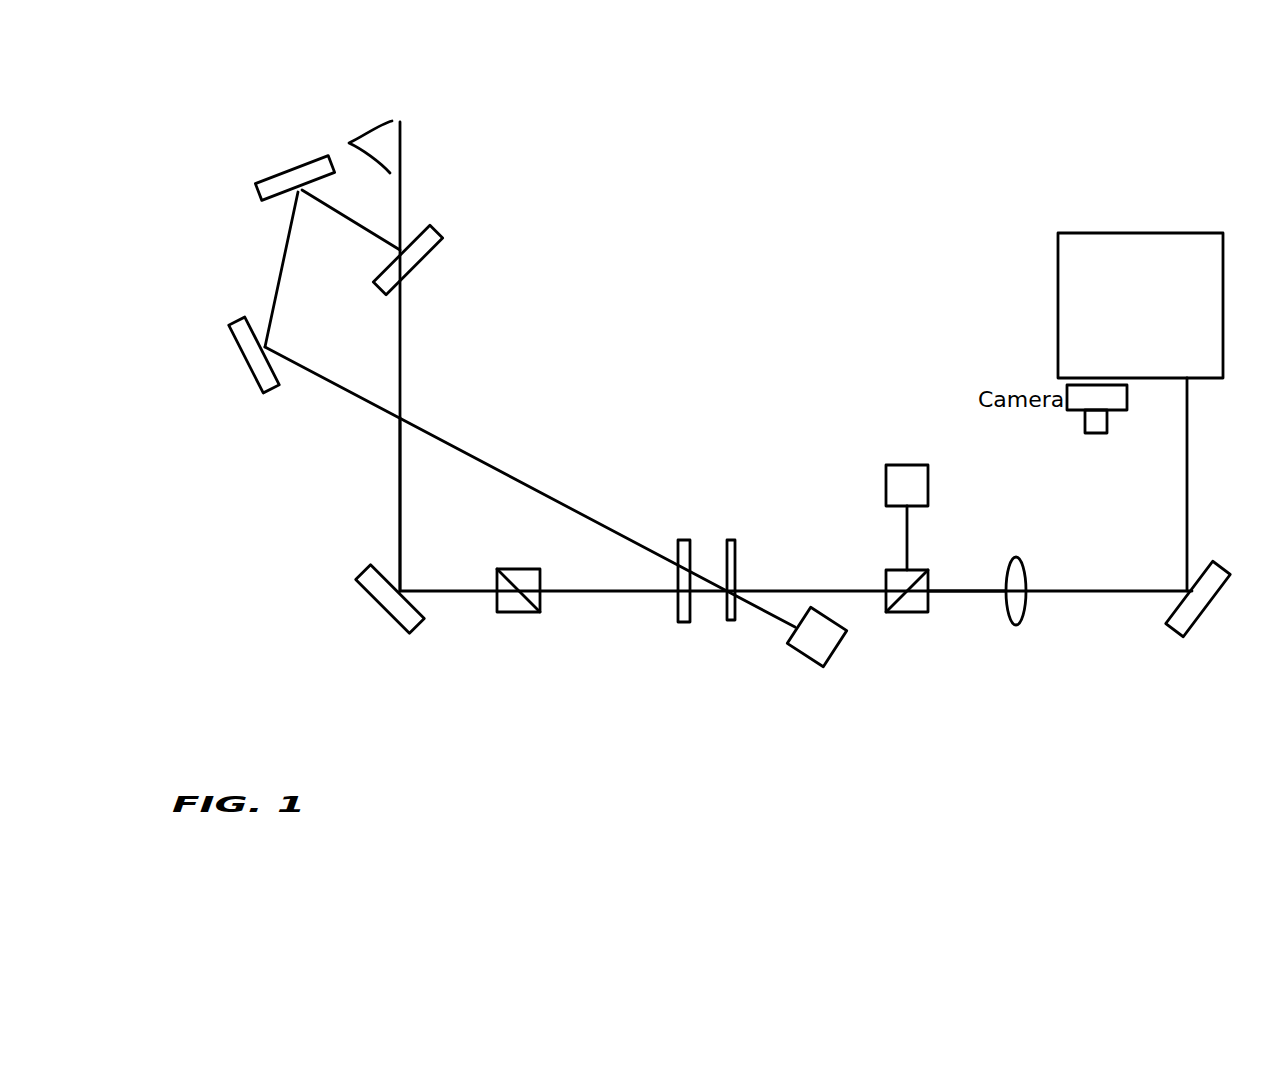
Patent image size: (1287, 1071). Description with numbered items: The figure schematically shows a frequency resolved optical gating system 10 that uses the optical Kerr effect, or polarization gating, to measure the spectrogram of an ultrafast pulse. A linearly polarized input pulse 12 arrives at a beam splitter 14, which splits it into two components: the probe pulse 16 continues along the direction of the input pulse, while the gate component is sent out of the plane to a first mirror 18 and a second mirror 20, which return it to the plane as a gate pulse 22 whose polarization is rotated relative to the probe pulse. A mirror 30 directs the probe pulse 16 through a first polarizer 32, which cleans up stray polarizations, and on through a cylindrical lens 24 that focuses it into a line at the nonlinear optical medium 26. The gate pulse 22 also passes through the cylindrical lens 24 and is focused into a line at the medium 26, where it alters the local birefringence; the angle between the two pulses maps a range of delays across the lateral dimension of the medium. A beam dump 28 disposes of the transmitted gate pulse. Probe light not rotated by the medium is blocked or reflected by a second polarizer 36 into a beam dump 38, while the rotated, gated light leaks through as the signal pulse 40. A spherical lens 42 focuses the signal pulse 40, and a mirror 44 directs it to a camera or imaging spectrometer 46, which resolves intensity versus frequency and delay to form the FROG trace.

The FROG system 10 is at (988, 148).
The input pulse 12 is at (461, 147).
The beam splitter 14 is at (443, 238).
The probe pulse 16 is at (398, 487).
The first mirror 18 is at (291, 168).
The second mirror 20 is at (243, 318).
The gate pulse 22 is at (487, 462).
The cylindrical lens 24 is at (690, 610).
The nonlinear optical medium 26 is at (735, 552).
The beam dump 28 is at (847, 693).
The mirror 30 is at (392, 620).
The first polarizer 32 is at (522, 613).
The second polarizer 36 is at (892, 613).
The beam dump 38 is at (928, 467).
The signal pulse 40 is at (973, 590).
The spherical lens 42 is at (1023, 610).
The mirror 44 is at (1193, 630).
The camera or imaging spectrometer 46 is at (1158, 233).